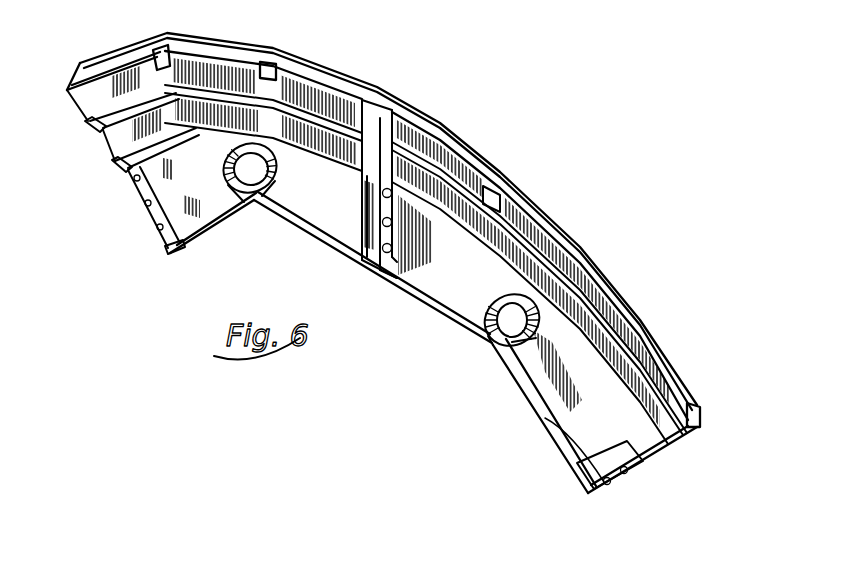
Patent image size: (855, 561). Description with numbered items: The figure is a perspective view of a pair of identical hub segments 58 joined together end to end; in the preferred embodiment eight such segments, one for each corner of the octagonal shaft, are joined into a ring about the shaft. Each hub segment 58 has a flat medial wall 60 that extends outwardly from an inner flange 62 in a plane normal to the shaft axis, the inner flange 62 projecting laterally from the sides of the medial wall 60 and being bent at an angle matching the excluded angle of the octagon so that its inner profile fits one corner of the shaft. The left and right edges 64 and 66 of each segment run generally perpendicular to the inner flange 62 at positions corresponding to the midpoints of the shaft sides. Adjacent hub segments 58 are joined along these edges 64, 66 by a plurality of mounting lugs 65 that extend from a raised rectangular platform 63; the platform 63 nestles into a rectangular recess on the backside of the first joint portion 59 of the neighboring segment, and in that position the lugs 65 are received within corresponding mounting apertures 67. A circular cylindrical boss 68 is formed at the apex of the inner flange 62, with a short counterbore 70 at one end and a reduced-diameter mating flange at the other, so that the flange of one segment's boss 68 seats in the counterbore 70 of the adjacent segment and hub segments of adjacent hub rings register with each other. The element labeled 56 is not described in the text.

The wall base 56 is at (638, 462).
The hub segment 58 is at (320, 62).
The first joint portion 59 is at (362, 262).
The medial wall 60 is at (330, 204).
The inner flange 62 is at (201, 236).
The raised rectangular platform 63 is at (140, 194).
The left edge 64 is at (90, 124).
The mounting lug 65 is at (158, 230).
The right edge 66 is at (656, 452).
The mounting aperture 67 is at (603, 486).
The circular cylindrical boss 68 is at (279, 170).
The counterbore 70 is at (487, 337).